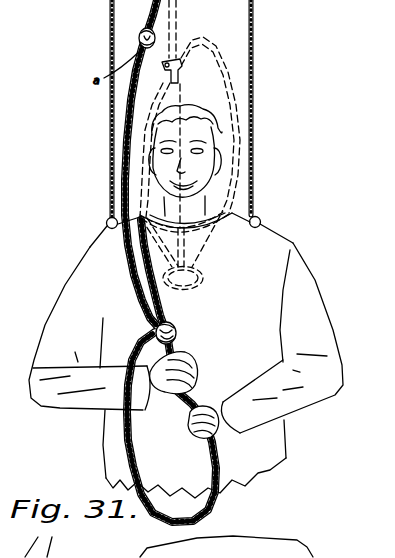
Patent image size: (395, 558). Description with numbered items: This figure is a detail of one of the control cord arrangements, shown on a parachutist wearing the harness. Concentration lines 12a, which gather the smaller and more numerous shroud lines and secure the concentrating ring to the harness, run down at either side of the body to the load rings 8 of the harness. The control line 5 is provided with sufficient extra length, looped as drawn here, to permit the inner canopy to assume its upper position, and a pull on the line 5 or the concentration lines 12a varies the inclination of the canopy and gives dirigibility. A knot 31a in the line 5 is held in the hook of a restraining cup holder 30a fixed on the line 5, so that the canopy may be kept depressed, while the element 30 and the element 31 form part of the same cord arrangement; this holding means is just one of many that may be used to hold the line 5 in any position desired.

The line 5 is at (150, 17).
The concentration lines 12a is at (270, 93).
The load ring 8 is at (92, 214).
The cord 30 is at (181, 73).
The fastener 31 is at (163, 74).
The knot 31a is at (176, 325).
The restraining cup holder 30a is at (177, 337).